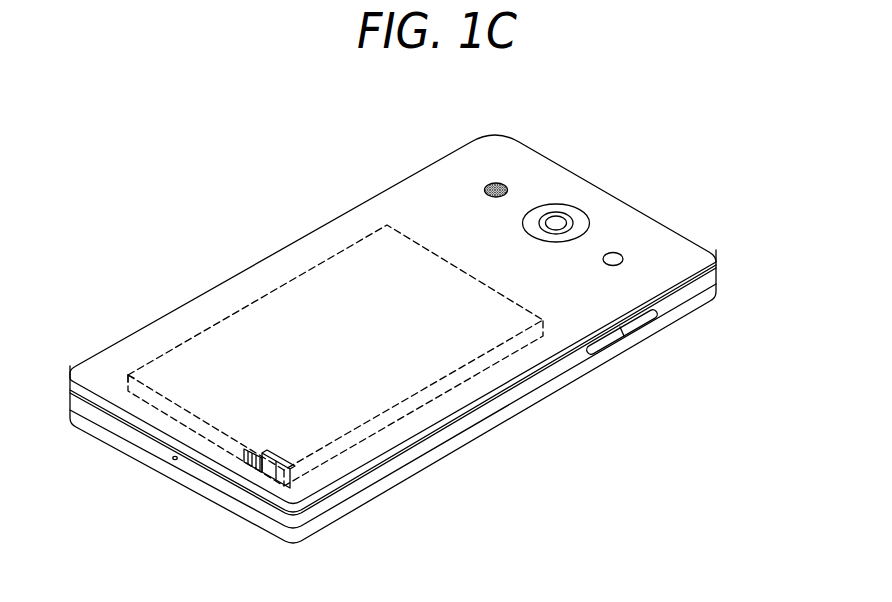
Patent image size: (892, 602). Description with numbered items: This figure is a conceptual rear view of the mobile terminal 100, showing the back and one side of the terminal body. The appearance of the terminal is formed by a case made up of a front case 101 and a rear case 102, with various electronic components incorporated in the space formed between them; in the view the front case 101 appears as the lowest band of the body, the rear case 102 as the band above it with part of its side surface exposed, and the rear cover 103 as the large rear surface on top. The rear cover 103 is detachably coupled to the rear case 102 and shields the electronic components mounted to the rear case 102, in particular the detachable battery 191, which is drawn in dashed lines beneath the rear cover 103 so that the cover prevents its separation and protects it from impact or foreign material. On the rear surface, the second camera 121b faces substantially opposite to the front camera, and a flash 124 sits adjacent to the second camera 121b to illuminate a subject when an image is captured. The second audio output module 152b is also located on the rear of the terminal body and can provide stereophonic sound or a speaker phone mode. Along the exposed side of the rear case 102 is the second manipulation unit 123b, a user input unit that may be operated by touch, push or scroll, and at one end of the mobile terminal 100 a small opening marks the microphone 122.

The mobile terminal 100 is at (273, 203).
The front case 101 is at (719, 293).
The rear case 102 is at (718, 274).
The rear cover 103 is at (719, 255).
The second camera 121b is at (560, 217).
The microphone 122 is at (172, 461).
The second manipulation unit 123b is at (613, 345).
The flash 124 is at (620, 253).
The second audio output module 152b is at (504, 183).
The battery 191 is at (422, 405).